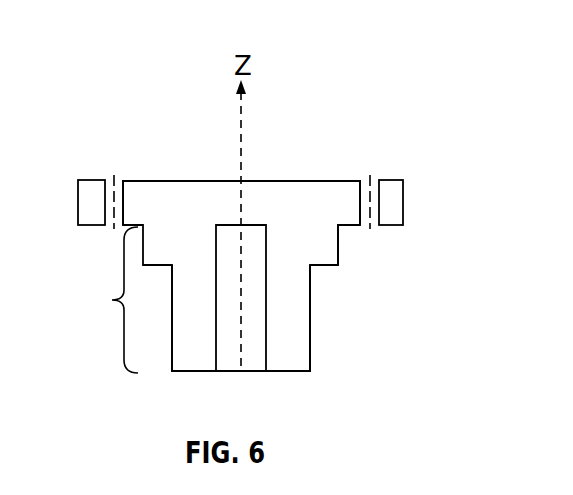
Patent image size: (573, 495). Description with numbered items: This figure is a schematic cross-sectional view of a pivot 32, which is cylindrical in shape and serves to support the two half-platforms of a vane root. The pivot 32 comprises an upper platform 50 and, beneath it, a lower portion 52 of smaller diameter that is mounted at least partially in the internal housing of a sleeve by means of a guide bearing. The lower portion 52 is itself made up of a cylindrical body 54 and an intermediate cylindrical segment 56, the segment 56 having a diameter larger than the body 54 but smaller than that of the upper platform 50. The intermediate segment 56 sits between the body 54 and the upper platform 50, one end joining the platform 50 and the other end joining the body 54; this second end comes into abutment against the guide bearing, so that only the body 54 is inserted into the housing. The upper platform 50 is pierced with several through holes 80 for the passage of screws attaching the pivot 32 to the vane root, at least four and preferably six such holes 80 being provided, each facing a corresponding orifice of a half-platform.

The pivot 32 is at (340, 86).
The through holes 80 is at (366, 175).
The upper platform 50 is at (186, 197).
The lower portion 52 is at (100, 299).
The cylindrical body 54 is at (295, 351).
The intermediate cylindrical segment 56 is at (323, 237).